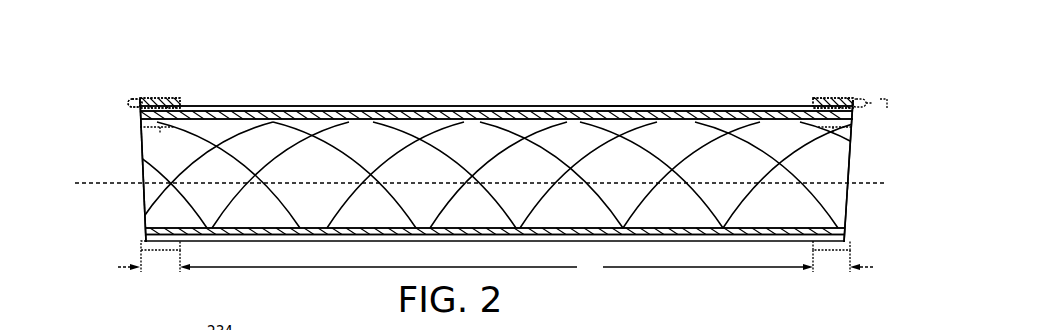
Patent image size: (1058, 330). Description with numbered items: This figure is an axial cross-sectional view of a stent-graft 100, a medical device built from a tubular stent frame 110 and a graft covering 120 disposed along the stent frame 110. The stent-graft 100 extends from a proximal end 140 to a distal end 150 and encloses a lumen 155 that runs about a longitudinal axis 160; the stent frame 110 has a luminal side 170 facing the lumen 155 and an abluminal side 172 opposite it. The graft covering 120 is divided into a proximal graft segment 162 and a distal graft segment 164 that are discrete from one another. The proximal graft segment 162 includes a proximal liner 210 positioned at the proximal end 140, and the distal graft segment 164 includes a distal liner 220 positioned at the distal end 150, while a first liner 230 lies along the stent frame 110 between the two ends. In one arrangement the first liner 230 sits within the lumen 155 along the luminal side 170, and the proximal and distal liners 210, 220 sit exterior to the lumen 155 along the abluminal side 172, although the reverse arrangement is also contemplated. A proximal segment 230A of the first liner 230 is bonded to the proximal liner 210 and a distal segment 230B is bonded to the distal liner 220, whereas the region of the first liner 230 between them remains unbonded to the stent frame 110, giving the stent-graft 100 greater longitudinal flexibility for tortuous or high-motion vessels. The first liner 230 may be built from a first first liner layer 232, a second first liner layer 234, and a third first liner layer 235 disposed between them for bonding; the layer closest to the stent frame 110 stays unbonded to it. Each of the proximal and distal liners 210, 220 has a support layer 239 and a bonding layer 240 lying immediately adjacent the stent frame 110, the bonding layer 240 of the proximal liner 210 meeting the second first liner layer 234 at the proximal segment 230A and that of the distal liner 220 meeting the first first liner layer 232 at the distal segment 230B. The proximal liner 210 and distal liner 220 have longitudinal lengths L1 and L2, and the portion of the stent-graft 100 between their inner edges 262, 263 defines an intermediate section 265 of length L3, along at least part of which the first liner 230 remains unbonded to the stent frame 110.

The stent-graft 100 is at (547, 59).
The stent frame 110 is at (244, 105).
The graft covering 120 is at (893, 109).
The proximal end 140 is at (119, 154).
The distal end 150 is at (864, 170).
The lumen 155 is at (616, 165).
The longitudinal axis 160 is at (480, 183).
The proximal graft segment 162 is at (145, 87).
The distal graft segment 164 is at (841, 87).
The luminal side 170 is at (522, 136).
The abluminal side 172 is at (636, 89).
The proximal liner 210 is at (128, 104).
The distal liner 220 is at (868, 102).
The first liner 230 is at (132, 110).
The proximal segment 230A is at (160, 145).
The distal segment 230B is at (823, 145).
The first first liner layer 232 is at (480, 106).
The second first liner layer 234 is at (322, 108).
The third first liner layer 235 is at (382, 108).
The support layer 239 is at (162, 97).
The bonding layer 240 is at (174, 99).
The inner edge 262 is at (182, 248).
The inner edge 263 is at (812, 248).
The intermediate section 265 is at (560, 243).
The longitudinal length of proximal liner L1 is at (149, 262).
The longitudinal length of distal liner L2 is at (843, 262).
The longitudinal length of intermediate section L3 is at (496, 267).